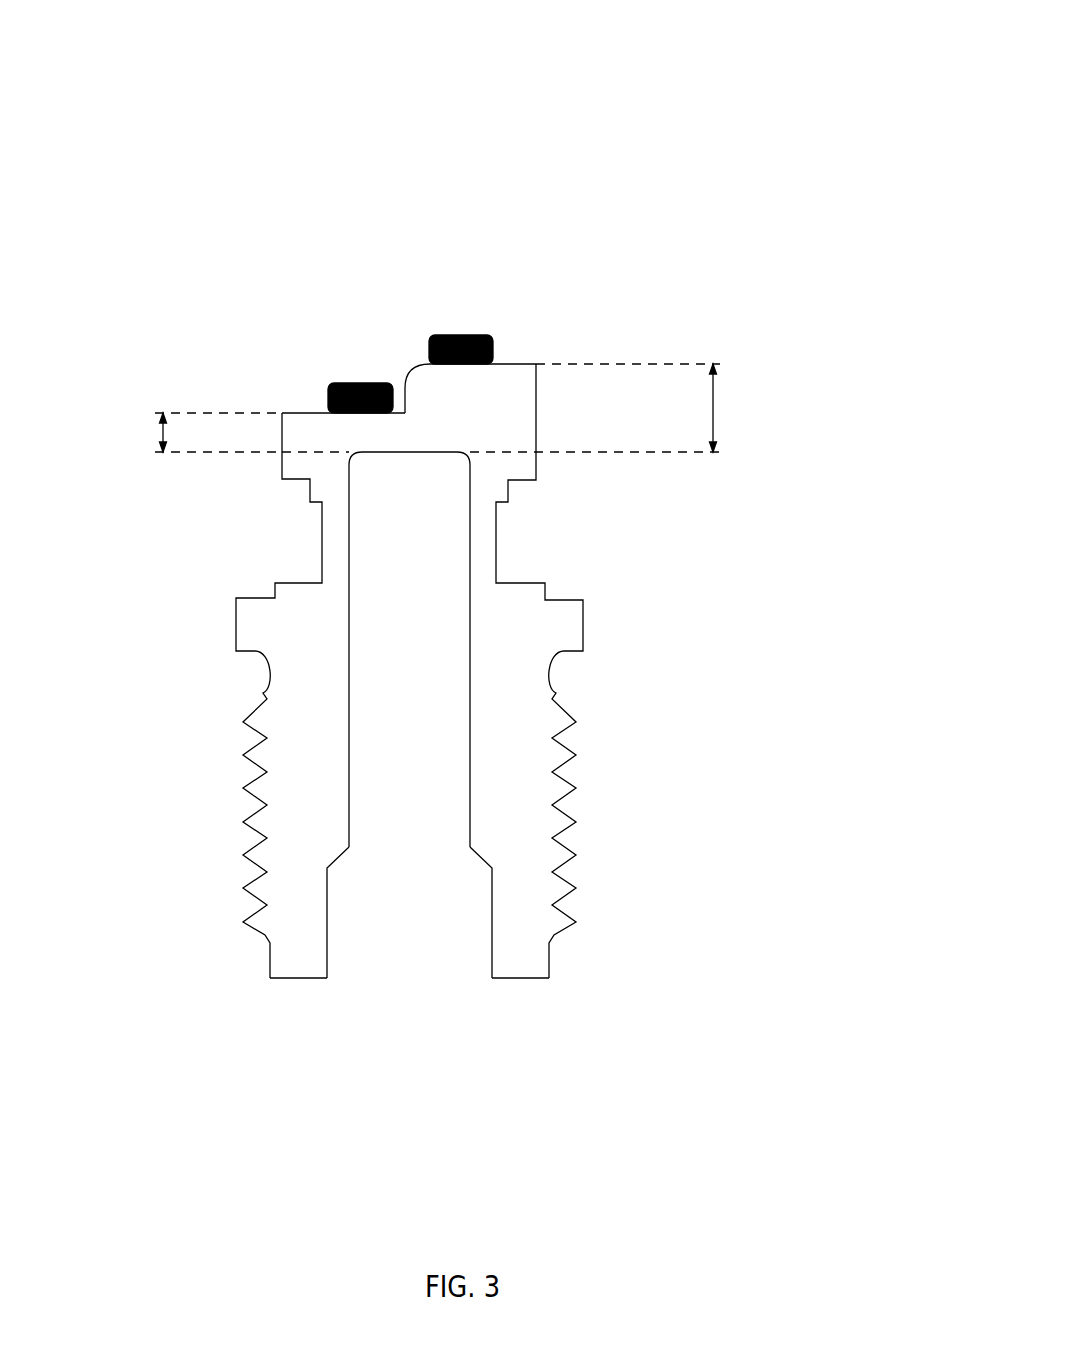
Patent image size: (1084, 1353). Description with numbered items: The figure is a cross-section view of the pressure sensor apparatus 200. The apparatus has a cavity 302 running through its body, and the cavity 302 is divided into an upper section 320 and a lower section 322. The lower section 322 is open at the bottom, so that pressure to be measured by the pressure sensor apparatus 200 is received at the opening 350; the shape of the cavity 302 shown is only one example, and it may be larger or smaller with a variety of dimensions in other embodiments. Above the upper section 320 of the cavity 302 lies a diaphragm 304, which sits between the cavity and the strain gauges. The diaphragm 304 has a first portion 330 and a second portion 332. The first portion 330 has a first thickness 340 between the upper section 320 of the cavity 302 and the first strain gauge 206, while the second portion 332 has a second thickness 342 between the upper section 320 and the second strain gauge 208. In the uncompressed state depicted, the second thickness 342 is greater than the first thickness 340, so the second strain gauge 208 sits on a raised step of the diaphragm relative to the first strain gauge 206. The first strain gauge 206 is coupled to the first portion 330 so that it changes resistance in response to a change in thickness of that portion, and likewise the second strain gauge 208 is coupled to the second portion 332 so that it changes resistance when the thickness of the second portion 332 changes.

The pressure sensor apparatus 200 is at (788, 112).
The first strain gauge 206 is at (361, 376).
The second strain gauge 208 is at (453, 327).
The cavity 302 is at (526, 790).
The diaphragm 304 is at (307, 430).
The upper section 320 is at (410, 462).
The lower section 322 is at (438, 980).
The first portion 330 is at (387, 430).
The second portion 332 is at (438, 398).
The first thickness 340 is at (150, 433).
The second thickness 342 is at (713, 408).
The opening 350 is at (368, 1020).